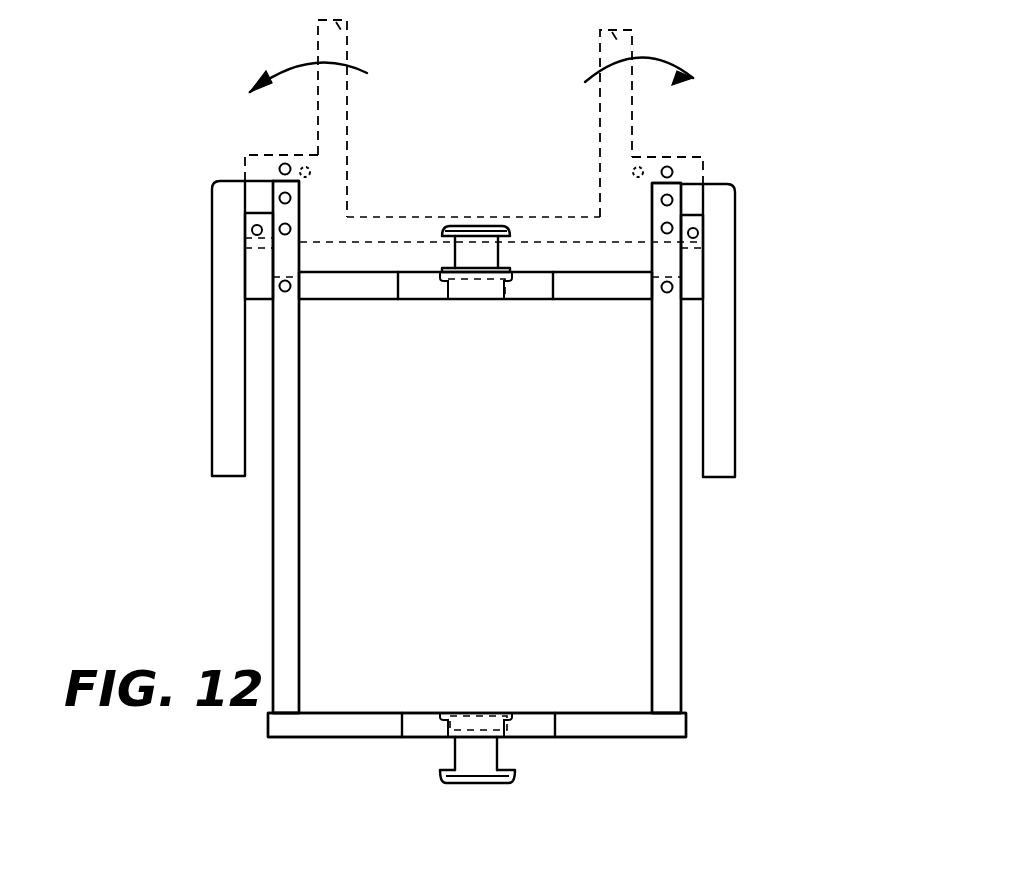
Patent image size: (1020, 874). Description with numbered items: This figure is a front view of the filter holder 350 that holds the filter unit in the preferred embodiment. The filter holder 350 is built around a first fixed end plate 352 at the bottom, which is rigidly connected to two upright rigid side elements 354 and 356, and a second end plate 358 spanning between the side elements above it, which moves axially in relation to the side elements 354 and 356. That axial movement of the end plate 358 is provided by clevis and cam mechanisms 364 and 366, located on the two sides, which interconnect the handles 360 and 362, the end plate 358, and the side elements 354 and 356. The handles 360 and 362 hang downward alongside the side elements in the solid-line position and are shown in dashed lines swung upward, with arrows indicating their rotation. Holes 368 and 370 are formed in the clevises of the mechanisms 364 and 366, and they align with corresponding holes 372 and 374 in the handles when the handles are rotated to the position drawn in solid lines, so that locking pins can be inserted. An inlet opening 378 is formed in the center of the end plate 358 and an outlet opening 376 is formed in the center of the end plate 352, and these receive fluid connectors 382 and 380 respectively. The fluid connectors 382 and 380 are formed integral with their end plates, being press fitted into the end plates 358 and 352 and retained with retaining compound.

The filter holder 350 is at (700, 578).
The first fixed end plate 352 is at (325, 712).
The rigid side element 354 is at (273, 578).
The rigid side element 356 is at (683, 683).
The second end plate 358 is at (583, 301).
The handle 360 is at (318, 62).
The handle 362 is at (632, 62).
The clevis and cam mechanism 364 is at (252, 212).
The clevis and cam mechanism 366 is at (692, 216).
The hole 368 is at (252, 232).
The hole 370 is at (698, 234).
The hole 372 is at (287, 154).
The hole 374 is at (655, 156).
The outlet opening 376 is at (512, 712).
The inlet opening 378 is at (445, 301).
The fluid connector 380 is at (500, 764).
The fluid connector 382 is at (453, 226).